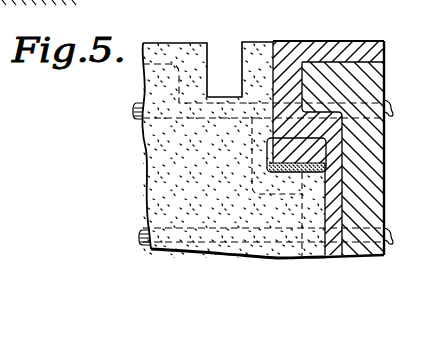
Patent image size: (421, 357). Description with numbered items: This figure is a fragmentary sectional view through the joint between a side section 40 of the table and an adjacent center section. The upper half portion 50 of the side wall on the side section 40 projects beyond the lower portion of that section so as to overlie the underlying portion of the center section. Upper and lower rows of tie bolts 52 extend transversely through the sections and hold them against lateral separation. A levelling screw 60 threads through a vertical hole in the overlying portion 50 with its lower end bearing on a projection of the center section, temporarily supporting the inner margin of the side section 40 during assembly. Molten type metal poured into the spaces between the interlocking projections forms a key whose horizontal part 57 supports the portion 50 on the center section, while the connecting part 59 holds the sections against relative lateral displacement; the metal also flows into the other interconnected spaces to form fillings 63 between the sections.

The side section 40 is at (380, 51).
The upper half portion 50 is at (285, 41).
The tie bolts 52 is at (136, 107).
The horizontal part of the key 57 is at (290, 173).
The connecting part of the key 59 is at (267, 159).
The levelling screws 60 is at (306, 45).
The fillings 63 is at (172, 184).